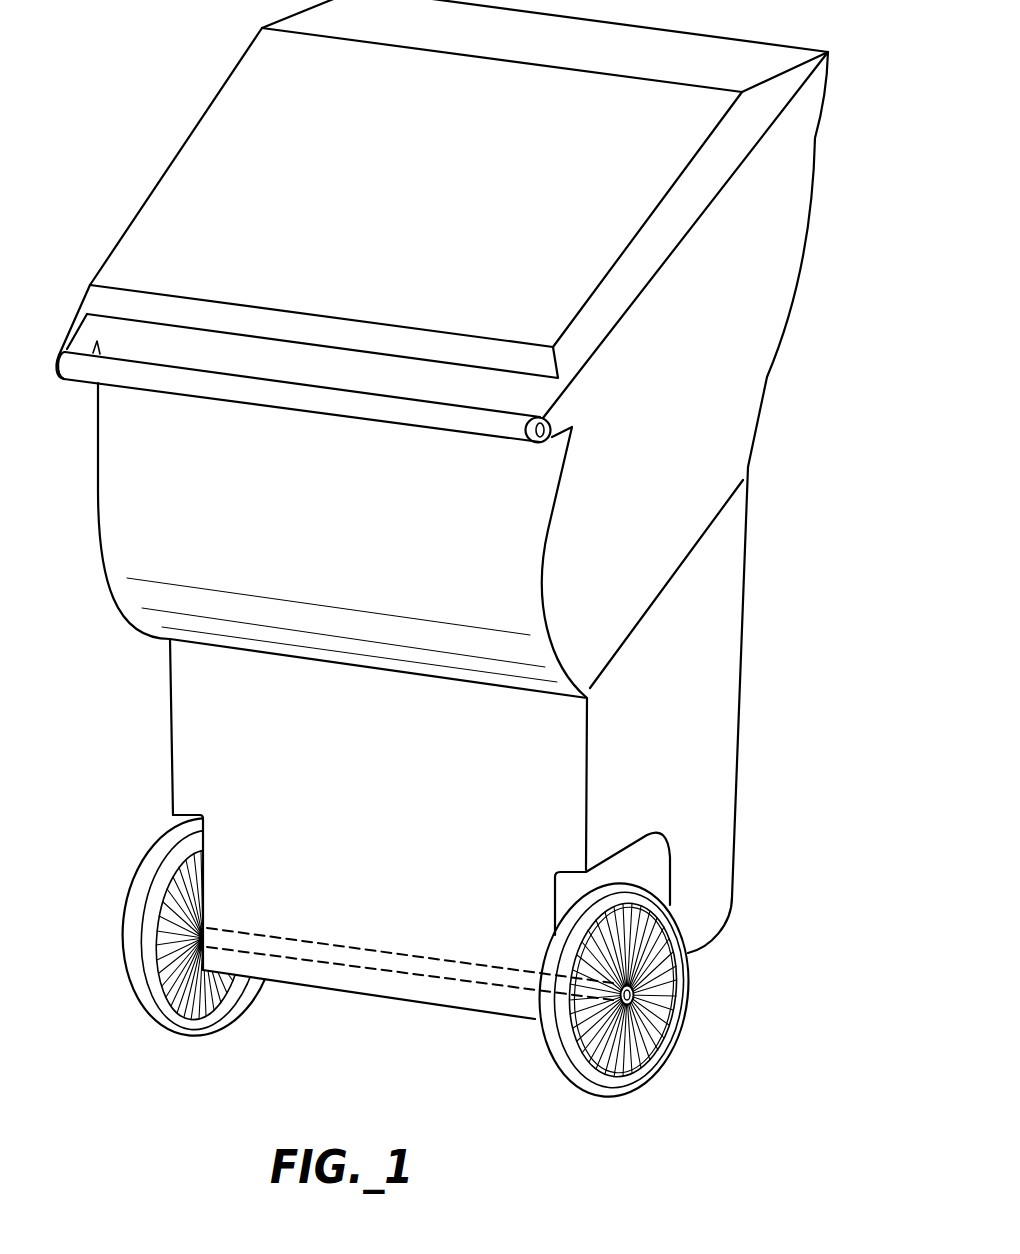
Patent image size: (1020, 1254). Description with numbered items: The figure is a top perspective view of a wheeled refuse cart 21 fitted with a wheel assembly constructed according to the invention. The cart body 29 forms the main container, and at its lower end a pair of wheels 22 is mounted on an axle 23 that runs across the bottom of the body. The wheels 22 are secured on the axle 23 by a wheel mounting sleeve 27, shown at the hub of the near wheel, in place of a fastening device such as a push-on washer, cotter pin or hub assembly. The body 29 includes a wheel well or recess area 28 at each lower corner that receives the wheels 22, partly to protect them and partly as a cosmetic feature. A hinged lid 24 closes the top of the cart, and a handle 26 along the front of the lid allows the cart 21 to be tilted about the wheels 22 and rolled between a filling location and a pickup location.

The cart 21 is at (778, 386).
The wheels 22 is at (152, 1013).
The axle 23 is at (377, 948).
The hinged lid 24 is at (172, 172).
The handle 26 is at (272, 395).
The wheel mounting sleeve 27 is at (647, 998).
The wheel well 28 is at (170, 822).
The cart body 29 is at (735, 650).